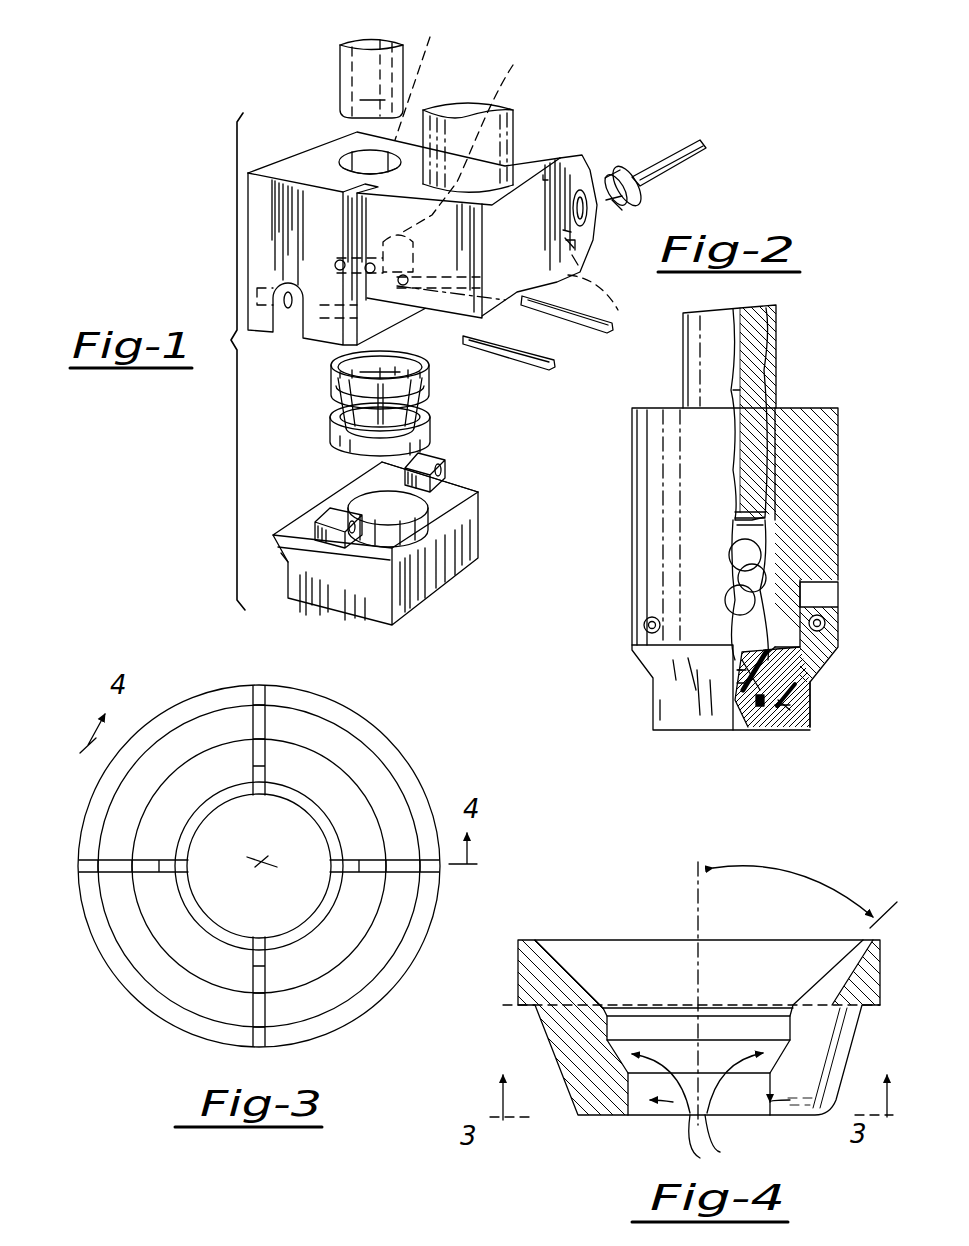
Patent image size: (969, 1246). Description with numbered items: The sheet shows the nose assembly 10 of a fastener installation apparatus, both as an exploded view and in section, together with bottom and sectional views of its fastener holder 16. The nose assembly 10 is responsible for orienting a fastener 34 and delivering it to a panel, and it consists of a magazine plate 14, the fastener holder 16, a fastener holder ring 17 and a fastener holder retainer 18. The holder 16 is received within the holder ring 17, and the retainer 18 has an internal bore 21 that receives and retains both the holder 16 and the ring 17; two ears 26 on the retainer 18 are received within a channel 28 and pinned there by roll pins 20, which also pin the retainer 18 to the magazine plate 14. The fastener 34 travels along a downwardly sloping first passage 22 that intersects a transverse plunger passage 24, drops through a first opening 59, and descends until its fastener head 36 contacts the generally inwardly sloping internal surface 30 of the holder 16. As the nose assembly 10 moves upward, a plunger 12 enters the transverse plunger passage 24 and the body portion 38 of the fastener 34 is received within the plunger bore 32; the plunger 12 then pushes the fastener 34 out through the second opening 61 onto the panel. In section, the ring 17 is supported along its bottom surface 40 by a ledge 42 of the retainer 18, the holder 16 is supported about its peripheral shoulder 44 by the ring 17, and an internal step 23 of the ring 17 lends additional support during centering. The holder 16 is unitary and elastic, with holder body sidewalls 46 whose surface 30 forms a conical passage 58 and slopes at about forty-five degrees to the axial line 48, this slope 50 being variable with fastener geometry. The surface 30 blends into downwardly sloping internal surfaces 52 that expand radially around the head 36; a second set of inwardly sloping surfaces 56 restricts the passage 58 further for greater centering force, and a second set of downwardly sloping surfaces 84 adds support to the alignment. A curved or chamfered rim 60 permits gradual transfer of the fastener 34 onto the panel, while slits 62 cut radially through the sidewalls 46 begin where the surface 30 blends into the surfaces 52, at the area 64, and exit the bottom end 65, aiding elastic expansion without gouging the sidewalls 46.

In FIG. 1, the nose assembly 10 is at (236, 320).
In FIG. 2, the nose assembly 10 is at (608, 640).
In FIG. 1, the plunger 12 is at (345, 88).
In FIG. 1, the magazine plate 14 is at (520, 150).
In FIG. 1, the fastener holder 16 is at (440, 395).
In FIG. 2, the fastener holder 16 is at (750, 712).
In FIG. 3, the fastener holder 16 is at (266, 872).
In FIG. 4, the fastener holder 16 is at (667, 1022).
In FIG. 1, the fastener holder ring 17 is at (440, 440).
In FIG. 2, the fastener holder ring 17 is at (800, 690).
In FIG. 1, the fastener holder retainer 18 is at (478, 548).
In FIG. 2, the fastener holder retainer 18 is at (652, 708).
In FIG. 1, the roll pins 20 is at (555, 365).
In FIG. 2, the roll pins 20 is at (648, 618).
In FIG. 1, the internal bore 21 is at (478, 492).
In FIG. 1, the first passage 22 is at (590, 304).
In FIG. 2, the first passage 22 is at (760, 600).
In FIG. 2, the internal step 23 is at (760, 730).
In FIG. 1, the transverse plunger passage 24 is at (435, 120).
In FIG. 2, the transverse plunger passage 24 is at (782, 420).
In FIG. 1, the ears 26 is at (318, 545).
In FIG. 1, the channel 28 is at (272, 358).
In FIG. 1, the generally inwardly sloping internal surface 30 is at (345, 377).
In FIG. 2, the generally inwardly sloping internal surface 30 is at (770, 680).
In FIG. 4, the generally inwardly sloping internal surface 30 is at (590, 982).
In FIG. 1, the plunger bore 32 is at (432, 70).
In FIG. 1, the fastener 34 is at (670, 125).
In FIG. 1, the fastener head 36 is at (616, 210).
In FIG. 1, the body portion 38 is at (660, 185).
In FIG. 2, the bottom surface 40 is at (808, 712).
In FIG. 2, the ledge 42 is at (790, 720).
In FIG. 2, the peripheral shoulder 44 is at (782, 650).
In FIG. 3, the holder body sidewalls 46 is at (402, 782).
In FIG. 4, the holder body sidewalls 46 is at (545, 975).
In FIG. 4, the axial line 48 is at (698, 1120).
In FIG. 4, the slope 50 is at (790, 880).
In FIG. 4, the generally downwardly sloping internal surface 52 is at (624, 1024).
In FIG. 4, the second set of generally inwardly sloping internal surfaces 56 is at (700, 1112).
In FIG. 4, the conical passage 58 is at (672, 878).
In FIG. 1, the first opening 59 is at (425, 372).
In FIG. 4, the first opening 59 is at (605, 942).
In FIG. 4, the rim 60 is at (632, 1113).
In FIG. 4, the second opening 61 is at (780, 1120).
In FIG. 3, the slits 62 is at (258, 700).
In FIG. 3, the slit beginning area 64 is at (362, 728).
In FIG. 4, the slit beginning area 64 is at (545, 1012).
In FIG. 4, the bottom end 65 is at (600, 1120).
In FIG. 4, the second set of generally downwardly sloping internal surfaces 84 is at (700, 1110).